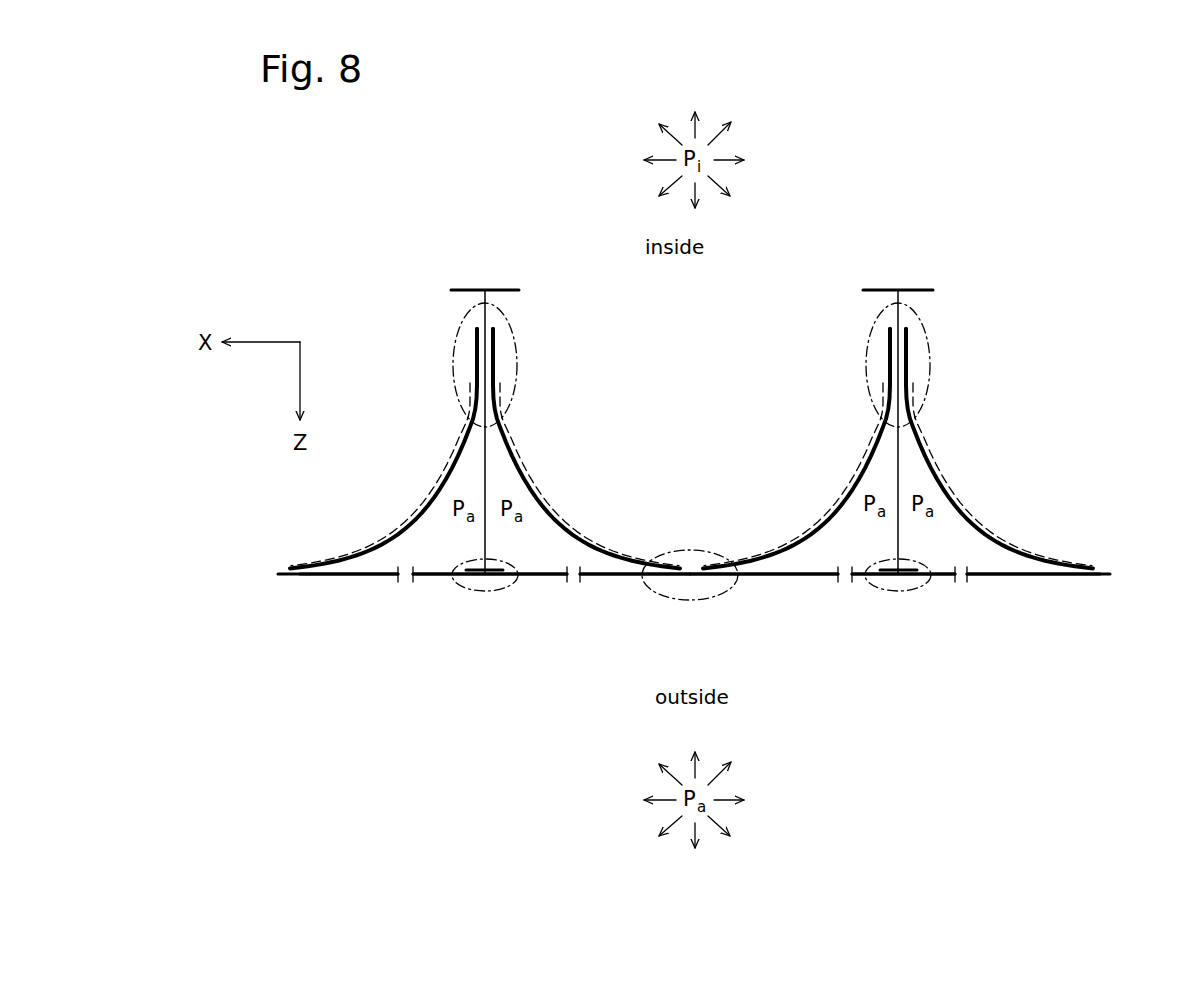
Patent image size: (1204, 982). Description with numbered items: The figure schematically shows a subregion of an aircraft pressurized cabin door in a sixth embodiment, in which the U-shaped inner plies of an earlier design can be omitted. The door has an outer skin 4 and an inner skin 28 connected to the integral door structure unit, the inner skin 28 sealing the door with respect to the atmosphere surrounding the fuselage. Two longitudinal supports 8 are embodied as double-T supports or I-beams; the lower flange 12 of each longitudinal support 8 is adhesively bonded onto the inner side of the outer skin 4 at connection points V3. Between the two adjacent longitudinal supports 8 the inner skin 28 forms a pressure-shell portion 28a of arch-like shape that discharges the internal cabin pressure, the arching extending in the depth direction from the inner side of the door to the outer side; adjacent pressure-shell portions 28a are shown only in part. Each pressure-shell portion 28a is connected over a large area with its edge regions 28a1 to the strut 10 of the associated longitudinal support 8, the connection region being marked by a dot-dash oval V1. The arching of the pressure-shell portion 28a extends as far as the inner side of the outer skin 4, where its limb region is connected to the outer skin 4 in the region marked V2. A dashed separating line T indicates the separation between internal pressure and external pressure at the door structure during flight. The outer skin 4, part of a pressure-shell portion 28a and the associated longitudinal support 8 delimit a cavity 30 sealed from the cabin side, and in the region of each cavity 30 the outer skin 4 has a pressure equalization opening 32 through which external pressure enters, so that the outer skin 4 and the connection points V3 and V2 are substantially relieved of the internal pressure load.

The outer skin 4 is at (1058, 580).
The longitudinal support 8 is at (488, 266).
The strut 10 is at (487, 470).
The flange 12 is at (498, 291).
The inner skin 28 is at (790, 538).
The pressure-shell portion 28a is at (402, 527).
The edge region 28a1 is at (478, 336).
The cavity 30 is at (407, 542).
The pressure equalization opening 32 is at (404, 584).
The separating line T is at (433, 490).
The connection region V1 is at (510, 332).
The connection region V2 is at (692, 600).
The connection point V3 is at (490, 591).